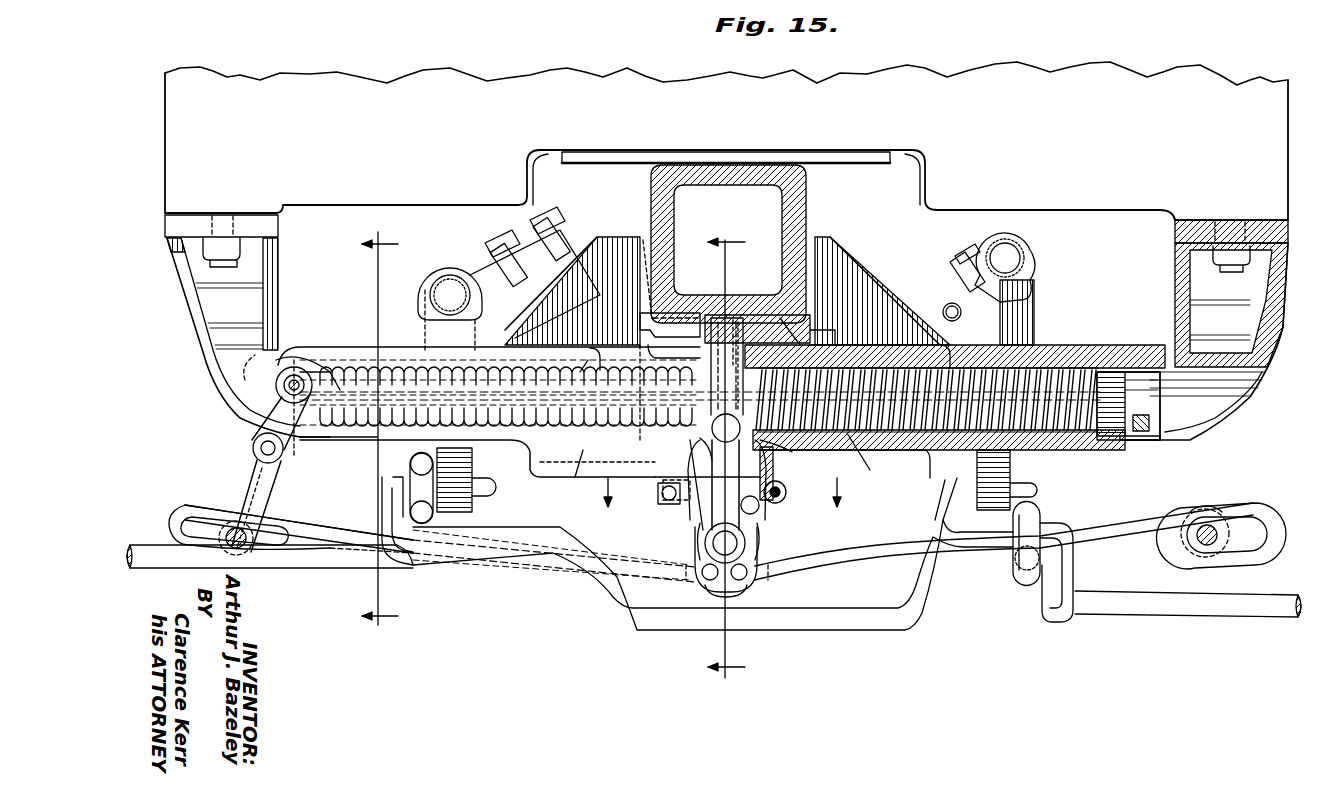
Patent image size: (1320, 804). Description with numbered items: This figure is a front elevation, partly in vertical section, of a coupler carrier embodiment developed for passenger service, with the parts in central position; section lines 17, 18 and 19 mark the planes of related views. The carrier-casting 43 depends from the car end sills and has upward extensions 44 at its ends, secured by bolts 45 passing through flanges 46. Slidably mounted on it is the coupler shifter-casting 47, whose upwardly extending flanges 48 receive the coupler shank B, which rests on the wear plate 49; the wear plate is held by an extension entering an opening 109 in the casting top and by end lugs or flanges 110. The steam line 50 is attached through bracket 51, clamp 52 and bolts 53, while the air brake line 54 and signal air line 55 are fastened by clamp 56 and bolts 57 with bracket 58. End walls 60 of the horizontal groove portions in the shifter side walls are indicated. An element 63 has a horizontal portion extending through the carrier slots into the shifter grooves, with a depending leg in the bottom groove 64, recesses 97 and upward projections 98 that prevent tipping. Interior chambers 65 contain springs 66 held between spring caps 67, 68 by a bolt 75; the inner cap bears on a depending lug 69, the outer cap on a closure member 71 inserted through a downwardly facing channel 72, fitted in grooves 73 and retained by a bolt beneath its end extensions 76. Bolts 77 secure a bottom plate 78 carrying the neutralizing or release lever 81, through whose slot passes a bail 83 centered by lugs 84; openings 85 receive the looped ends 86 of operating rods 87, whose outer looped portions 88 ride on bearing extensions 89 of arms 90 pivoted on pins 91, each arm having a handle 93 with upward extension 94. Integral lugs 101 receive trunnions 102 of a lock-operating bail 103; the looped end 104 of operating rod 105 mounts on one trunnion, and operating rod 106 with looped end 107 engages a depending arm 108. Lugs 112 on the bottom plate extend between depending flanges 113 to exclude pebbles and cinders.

The coupler shank B is at (728, 172).
The section line 17 is at (726, 453).
The section line 18 is at (380, 433).
The section line 19 is at (728, 492).
The carrier-casting 43 is at (1062, 355).
The upward extensions 44 is at (190, 348).
The bolts 45 is at (222, 266).
The flanges 46 is at (199, 216).
The coupler shifter-casting 47 is at (347, 358).
The upwardly extending flanges 48 is at (560, 263).
The wear plate 49 is at (665, 318).
The steam line 50 is at (450, 295).
The bracket 51 is at (453, 305).
The clamp 52 is at (455, 263).
The bolts 53 is at (545, 222).
The air brake line 54 is at (1005, 258).
The signal air line 55 is at (950, 303).
The clamp 56 is at (995, 238).
The bolts 57 is at (958, 267).
The bracket 58 is at (1034, 289).
The end walls of horizontal groove portions 60 is at (575, 360).
The element 63 is at (717, 335).
The groove 64 is at (848, 435).
The interior chambers 65 is at (393, 365).
The springs 66 is at (383, 437).
The spring cap 67 is at (813, 345).
The spring cap 68 is at (1108, 377).
The depending lug 69 is at (750, 318).
The closure member 71 is at (1140, 378).
The channel 72 is at (1213, 407).
The grooves 73 is at (1121, 440).
The bolt 75 is at (1078, 422).
The end extensions 76 is at (1155, 408).
The bolts 77 is at (665, 503).
The bottom plate 78 is at (757, 506).
The neutralizing or release lever 81 is at (700, 524).
The bail 83 is at (740, 520).
The lugs 84 is at (705, 545).
The openings 85 is at (723, 595).
The hooked or looped ends 86 is at (690, 575).
The operating rods 87 is at (350, 533).
The looped portion 88 is at (178, 522).
The bearing extension 89 is at (242, 548).
The arm 90 is at (258, 465).
The pin 91 is at (280, 390).
The handle 93 is at (252, 452).
The upward extension 94 is at (262, 420).
The recesses 97 is at (1214, 516).
The upwardly extending projections 98 is at (731, 363).
The integral lugs 101 is at (472, 463).
The trunnions 102 is at (490, 492).
The bail 103 is at (608, 610).
The looped end 104 is at (418, 483).
The operating rod 105 is at (270, 555).
The operating rod 106 is at (1188, 604).
The looped end 107 is at (1022, 560).
The arm 108 is at (1050, 610).
The opening 109 is at (760, 337).
The lugs or flanges 110 is at (650, 333).
The lugs 112 is at (784, 491).
The depending flanges 113 is at (580, 478).